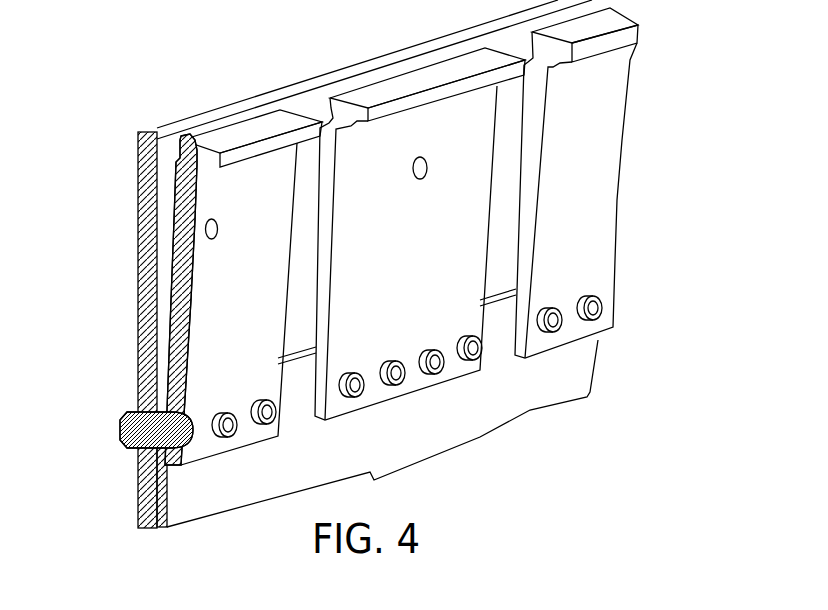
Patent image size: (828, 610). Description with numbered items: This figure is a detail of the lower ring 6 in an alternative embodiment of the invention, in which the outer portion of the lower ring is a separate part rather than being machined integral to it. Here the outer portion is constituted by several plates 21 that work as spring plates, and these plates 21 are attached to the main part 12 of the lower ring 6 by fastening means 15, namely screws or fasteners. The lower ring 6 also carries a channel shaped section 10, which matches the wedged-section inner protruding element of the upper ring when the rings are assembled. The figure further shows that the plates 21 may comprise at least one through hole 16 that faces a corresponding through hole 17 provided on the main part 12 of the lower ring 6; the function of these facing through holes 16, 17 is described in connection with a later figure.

The lower ring 6 is at (137, 200).
The channel shaped section 10 is at (181, 157).
The main part of the lower ring 12 is at (133, 508).
The fastening means 15 is at (127, 440).
The through hole 16 is at (193, 247).
The through hole 17 is at (204, 231).
The plates 21 is at (200, 337).